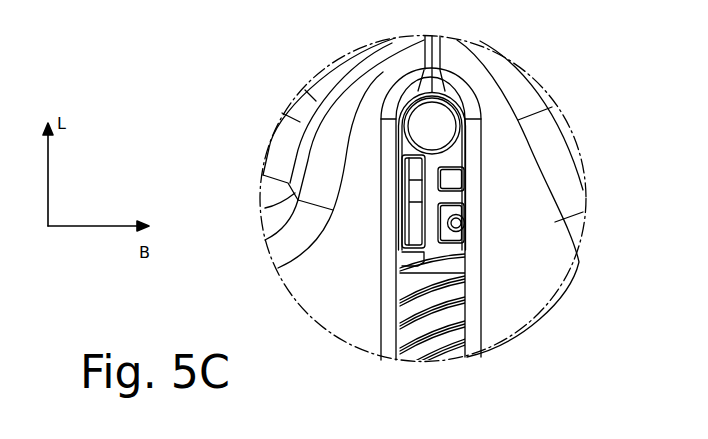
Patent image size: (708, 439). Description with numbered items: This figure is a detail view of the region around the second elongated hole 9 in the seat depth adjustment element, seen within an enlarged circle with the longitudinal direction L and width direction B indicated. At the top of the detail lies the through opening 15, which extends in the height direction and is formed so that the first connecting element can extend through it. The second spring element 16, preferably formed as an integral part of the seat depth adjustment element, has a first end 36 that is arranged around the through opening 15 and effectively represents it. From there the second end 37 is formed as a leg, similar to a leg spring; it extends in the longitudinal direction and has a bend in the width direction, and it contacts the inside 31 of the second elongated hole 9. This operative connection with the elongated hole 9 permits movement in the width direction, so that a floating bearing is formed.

The second elongated hole 9 is at (475, 280).
The through opening 15 is at (443, 117).
The second spring element 16 is at (412, 90).
The inside 31 is at (397, 163).
The first end 36 is at (435, 93).
The second end 37 is at (397, 197).